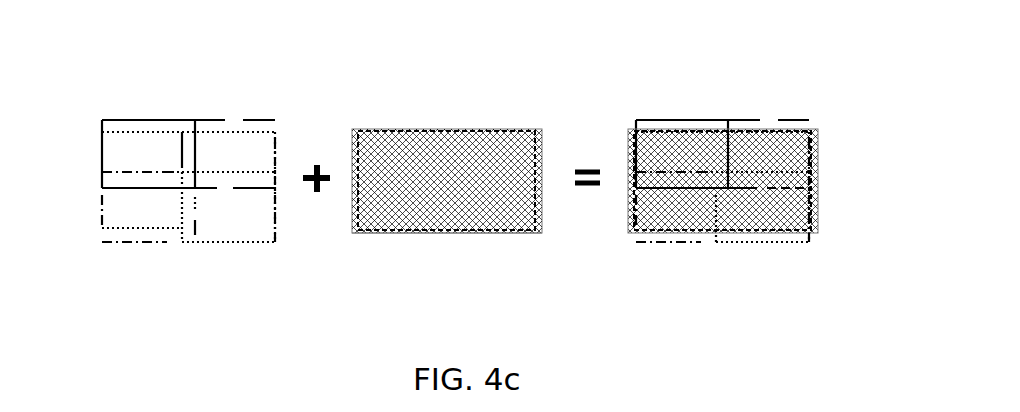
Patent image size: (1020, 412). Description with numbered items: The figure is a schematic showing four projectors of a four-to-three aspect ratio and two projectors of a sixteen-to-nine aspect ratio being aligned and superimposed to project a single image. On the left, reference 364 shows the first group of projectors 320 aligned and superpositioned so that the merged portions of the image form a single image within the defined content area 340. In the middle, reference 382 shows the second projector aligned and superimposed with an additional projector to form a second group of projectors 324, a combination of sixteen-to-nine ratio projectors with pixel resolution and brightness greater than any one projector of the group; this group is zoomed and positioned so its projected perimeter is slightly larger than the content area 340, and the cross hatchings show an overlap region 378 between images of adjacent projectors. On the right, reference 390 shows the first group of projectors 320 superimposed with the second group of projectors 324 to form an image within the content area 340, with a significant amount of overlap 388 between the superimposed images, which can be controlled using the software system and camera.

The first group of projectors 320 is at (83, 243).
The second group of projectors 324 is at (359, 251).
The defined content area 340 is at (210, 132).
The alignment and superpositioning of the first group of projectors 364 is at (199, 259).
The overlap region 378 is at (512, 167).
The aligned and superimposed second projector and additional projector 382 is at (488, 250).
The overlap 388 is at (793, 182).
The superimposed first and second groups of projectors 390 is at (688, 266).